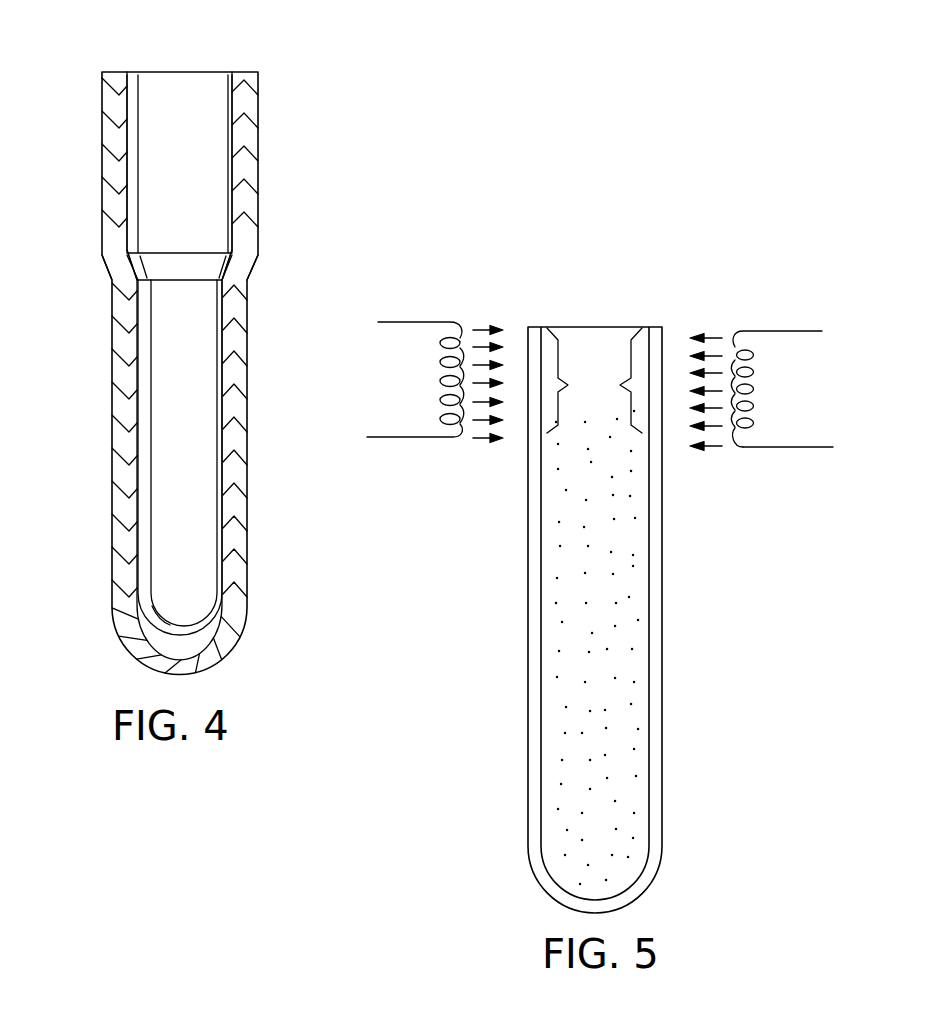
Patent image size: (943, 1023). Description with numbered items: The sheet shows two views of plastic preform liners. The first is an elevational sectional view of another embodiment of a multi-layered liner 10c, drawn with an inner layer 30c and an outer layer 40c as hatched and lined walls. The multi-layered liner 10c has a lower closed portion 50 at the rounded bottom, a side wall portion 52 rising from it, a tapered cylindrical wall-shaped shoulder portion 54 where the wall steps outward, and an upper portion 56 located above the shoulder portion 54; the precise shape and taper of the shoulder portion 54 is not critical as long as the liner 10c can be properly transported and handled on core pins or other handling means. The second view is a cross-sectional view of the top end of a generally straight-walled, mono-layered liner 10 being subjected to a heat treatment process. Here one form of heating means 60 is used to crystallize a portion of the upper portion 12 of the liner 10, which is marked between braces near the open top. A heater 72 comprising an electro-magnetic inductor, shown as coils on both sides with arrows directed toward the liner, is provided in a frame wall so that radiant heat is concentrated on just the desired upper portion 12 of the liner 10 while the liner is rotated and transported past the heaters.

In FIG. 4, the multi-layered liner 10c is at (200, 349).
In FIG. 4, the inner tube 30c is at (128, 96).
In FIG. 4, the outer sleeve 40c is at (186, 374).
In FIG. 4, the lower closed portion 50 is at (94, 597).
In FIG. 4, the side wall portion 52 is at (81, 290).
In FIG. 4, the tapered cylindrical wall-shaped shoulder portion 54 is at (83, 257).
In FIG. 4, the upper portion 56 is at (83, 72).
In FIG. 5, the liner 10 is at (662, 523).
In FIG. 5, the upper portion 12 is at (594, 380).
In FIG. 5, the heating means 60 is at (775, 326).
In FIG. 5, the heater 72 is at (808, 447).